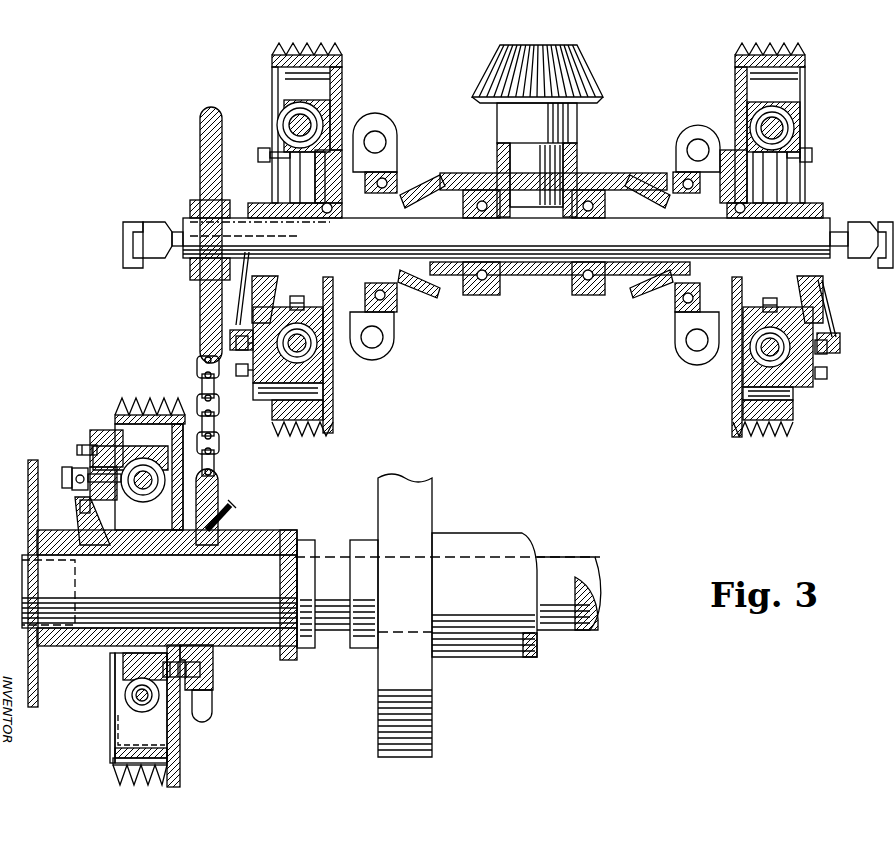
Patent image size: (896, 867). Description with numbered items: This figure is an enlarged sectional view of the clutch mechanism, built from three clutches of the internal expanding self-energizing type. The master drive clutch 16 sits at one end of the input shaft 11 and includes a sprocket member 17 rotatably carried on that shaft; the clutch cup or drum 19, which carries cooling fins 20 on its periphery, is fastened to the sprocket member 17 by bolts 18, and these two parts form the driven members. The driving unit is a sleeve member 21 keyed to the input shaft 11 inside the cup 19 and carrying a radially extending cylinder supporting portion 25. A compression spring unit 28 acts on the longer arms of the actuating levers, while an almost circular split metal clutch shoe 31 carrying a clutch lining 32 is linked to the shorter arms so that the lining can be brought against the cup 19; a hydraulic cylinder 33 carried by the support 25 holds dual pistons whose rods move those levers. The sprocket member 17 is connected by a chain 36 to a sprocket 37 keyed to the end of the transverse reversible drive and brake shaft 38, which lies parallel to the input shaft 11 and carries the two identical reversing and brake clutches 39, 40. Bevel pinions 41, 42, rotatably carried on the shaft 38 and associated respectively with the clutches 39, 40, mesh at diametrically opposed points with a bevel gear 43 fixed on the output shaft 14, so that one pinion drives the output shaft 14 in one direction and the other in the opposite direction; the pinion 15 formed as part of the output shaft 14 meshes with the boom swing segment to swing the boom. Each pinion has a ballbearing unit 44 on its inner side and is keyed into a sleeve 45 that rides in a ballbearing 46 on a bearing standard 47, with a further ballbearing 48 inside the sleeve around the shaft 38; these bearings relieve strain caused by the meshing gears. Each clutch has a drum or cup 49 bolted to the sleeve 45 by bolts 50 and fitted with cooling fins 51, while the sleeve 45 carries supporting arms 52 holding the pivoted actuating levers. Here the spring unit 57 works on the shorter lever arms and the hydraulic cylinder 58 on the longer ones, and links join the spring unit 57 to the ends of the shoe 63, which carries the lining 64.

The input shaft 11 is at (328, 570).
The output shaft 14 is at (577, 127).
The pinion 15 is at (575, 66).
The master drive clutch 16 is at (180, 742).
The sprocket member 17 is at (205, 696).
The bolts 18 is at (200, 672).
The clutch cup or drum 19 is at (122, 440).
The cooling fins 20 is at (134, 398).
The sleeve member 21 is at (88, 646).
The cylinder supporting portion 25 is at (95, 518).
The compression spring unit 28 is at (126, 698).
The clutch shoe 31 is at (143, 748).
The clutch lining 32 is at (115, 756).
The hydraulic cylinder 33 is at (142, 503).
The chain 36 is at (219, 410).
The sprocket 37 is at (200, 309).
The reversible drive and brake shaft 38 is at (186, 226).
The reversing and brake clutch 39 is at (345, 81).
The reversing and brake clutch 40 is at (730, 92).
The bevel pinion 41 is at (412, 186).
The bevel pinion 42 is at (648, 182).
The bevel gear 43 is at (450, 176).
The ballbearing unit 44 is at (495, 280).
The sleeve 45 is at (352, 176).
The ballbearing 46 is at (386, 178).
The bearing standard 47 is at (377, 350).
The ballbearing 48 is at (330, 214).
The drum or cup 49 is at (300, 76).
The bolts 50 is at (325, 160).
The cooling fins 51 is at (290, 50).
The supporting arms 52 is at (240, 290).
The spring unit 57 is at (278, 115).
The hydraulic cylinder 58 is at (305, 358).
The shoe 63 is at (272, 400).
The lining 64 is at (272, 423).